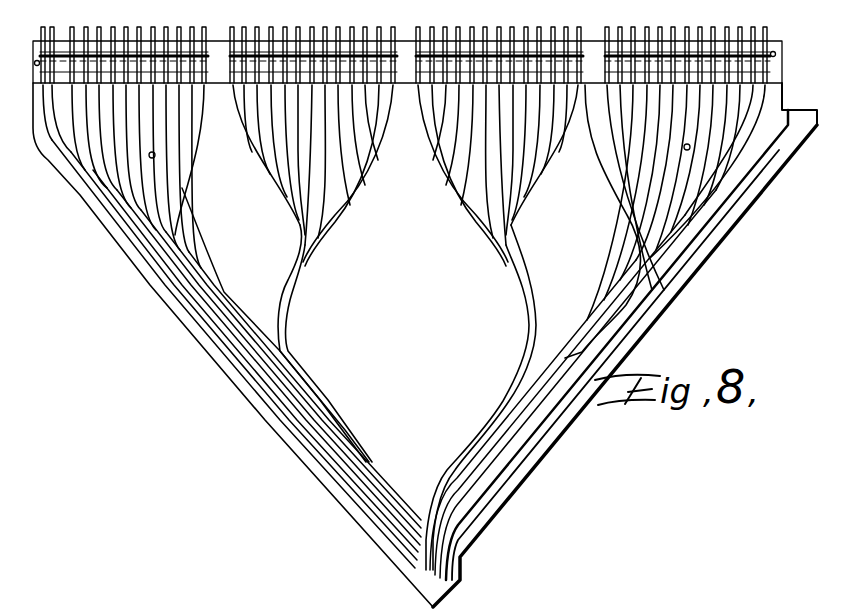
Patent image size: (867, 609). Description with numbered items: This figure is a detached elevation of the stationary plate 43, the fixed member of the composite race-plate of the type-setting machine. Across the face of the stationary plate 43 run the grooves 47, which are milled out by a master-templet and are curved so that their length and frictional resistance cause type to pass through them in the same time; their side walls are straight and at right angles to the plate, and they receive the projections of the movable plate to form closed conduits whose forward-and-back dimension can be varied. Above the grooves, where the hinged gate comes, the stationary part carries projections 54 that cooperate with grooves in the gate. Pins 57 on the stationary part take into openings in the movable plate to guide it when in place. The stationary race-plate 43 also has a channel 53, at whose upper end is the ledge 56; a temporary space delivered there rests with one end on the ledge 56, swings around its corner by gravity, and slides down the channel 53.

The stationary plate 43 is at (404, 273).
The grooves 47 is at (530, 298).
The channel 53 is at (752, 178).
The projections 54 is at (770, 24).
The ledge 56 is at (811, 111).
The pins 57 is at (155, 158).